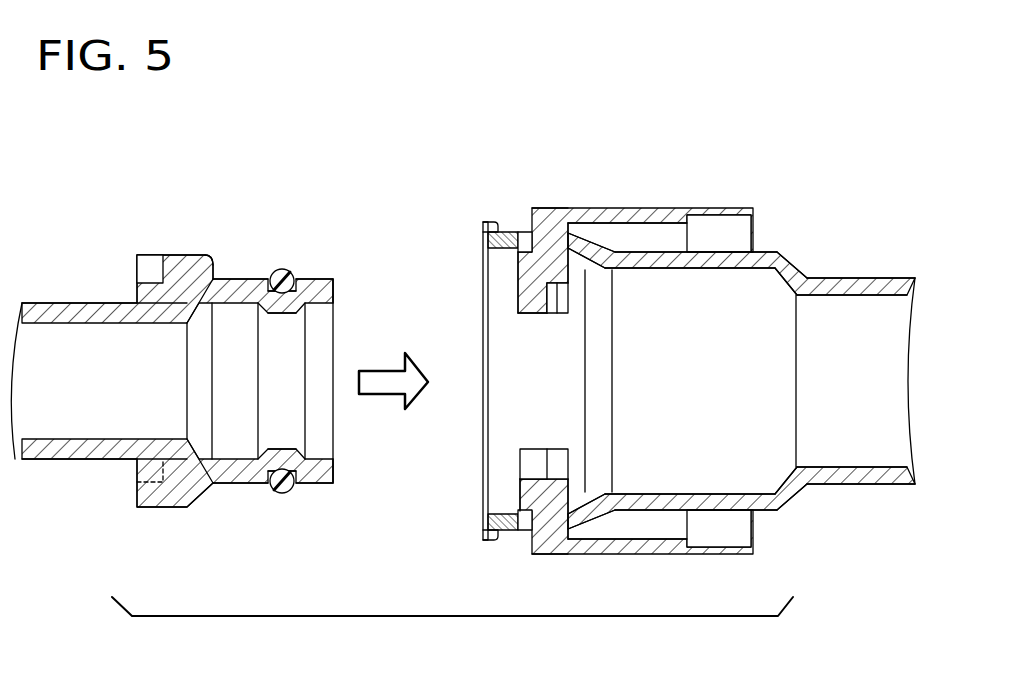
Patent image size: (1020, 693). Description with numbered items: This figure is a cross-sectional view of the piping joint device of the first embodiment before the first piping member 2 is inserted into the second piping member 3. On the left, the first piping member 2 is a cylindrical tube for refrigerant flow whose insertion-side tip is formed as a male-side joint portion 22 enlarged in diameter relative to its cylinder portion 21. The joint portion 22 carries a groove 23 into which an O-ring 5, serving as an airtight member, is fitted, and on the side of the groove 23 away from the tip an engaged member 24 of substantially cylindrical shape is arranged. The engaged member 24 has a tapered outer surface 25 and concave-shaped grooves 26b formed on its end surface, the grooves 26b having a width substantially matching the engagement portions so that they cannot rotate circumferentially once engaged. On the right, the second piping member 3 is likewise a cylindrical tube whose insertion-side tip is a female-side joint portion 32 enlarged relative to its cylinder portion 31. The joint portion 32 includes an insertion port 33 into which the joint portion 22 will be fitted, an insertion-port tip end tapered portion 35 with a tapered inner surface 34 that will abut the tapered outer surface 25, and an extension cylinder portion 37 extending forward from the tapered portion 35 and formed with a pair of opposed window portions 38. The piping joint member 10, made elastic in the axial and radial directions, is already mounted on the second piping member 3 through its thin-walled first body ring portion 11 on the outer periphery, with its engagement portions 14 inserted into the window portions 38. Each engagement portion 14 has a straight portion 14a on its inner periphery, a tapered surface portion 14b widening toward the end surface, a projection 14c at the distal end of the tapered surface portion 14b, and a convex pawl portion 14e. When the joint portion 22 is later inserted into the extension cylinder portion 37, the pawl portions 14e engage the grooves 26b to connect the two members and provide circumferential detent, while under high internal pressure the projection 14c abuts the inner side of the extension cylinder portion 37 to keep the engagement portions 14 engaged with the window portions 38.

The first piping member 2 is at (178, 369).
The cylinder portion 21 is at (78, 312).
The male-side joint portion 22 is at (318, 277).
The groove 23 is at (305, 468).
The engaged member 24 is at (167, 348).
The tapered outer surface 25 is at (206, 262).
The concave-shaped groove 26b is at (158, 262).
The O-ring 5 is at (278, 493).
The piping joint member 10 is at (598, 316).
The first body ring portion 11 is at (667, 225).
The engagement portion 14 is at (494, 334).
The straight portion 14a is at (558, 283).
The tapered surface portion 14b is at (548, 280).
The projection 14c is at (515, 255).
The pawl portion 14e is at (548, 270).
The extension cylinder portion 37 is at (486, 222).
The window portion 38 is at (518, 287).
The female-side joint portion 32 is at (708, 246).
The second piping member 3 is at (745, 303).
The cylinder portion 31 is at (868, 278).
The insertion port 33 is at (773, 268).
The tapered inner surface 34 is at (650, 252).
The insertion-port tip end tapered portion 35 is at (634, 210).